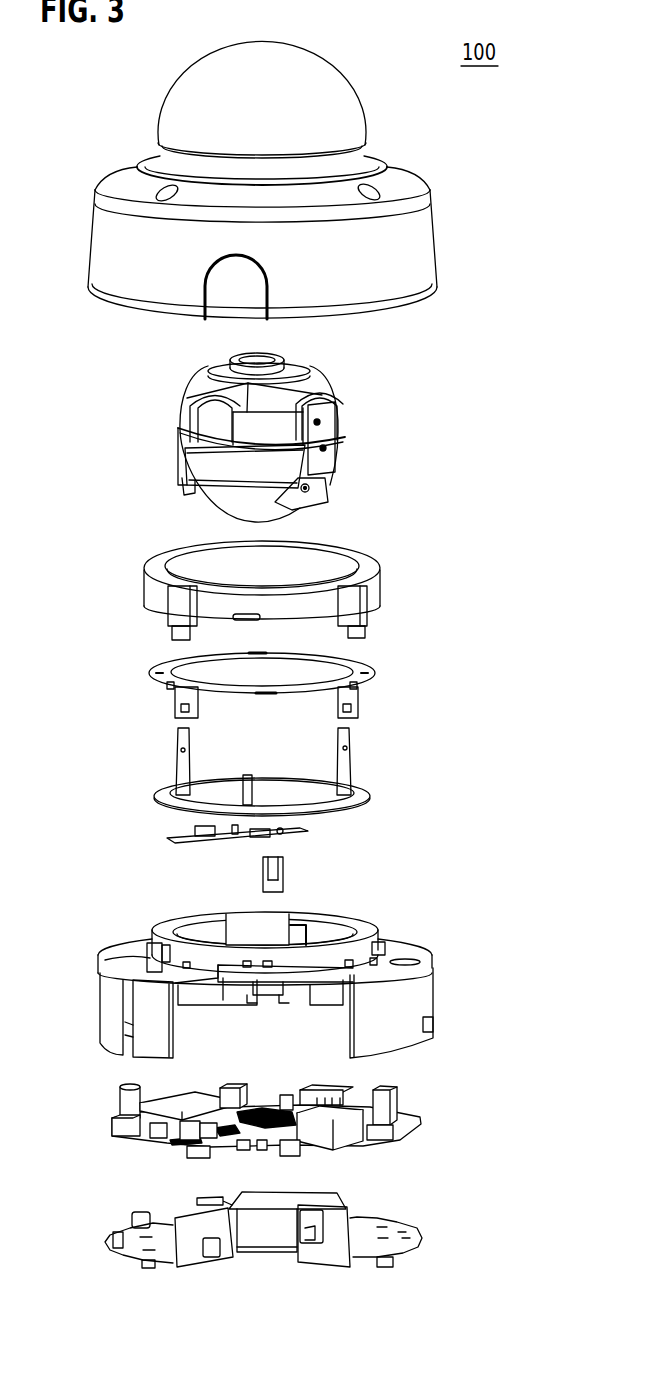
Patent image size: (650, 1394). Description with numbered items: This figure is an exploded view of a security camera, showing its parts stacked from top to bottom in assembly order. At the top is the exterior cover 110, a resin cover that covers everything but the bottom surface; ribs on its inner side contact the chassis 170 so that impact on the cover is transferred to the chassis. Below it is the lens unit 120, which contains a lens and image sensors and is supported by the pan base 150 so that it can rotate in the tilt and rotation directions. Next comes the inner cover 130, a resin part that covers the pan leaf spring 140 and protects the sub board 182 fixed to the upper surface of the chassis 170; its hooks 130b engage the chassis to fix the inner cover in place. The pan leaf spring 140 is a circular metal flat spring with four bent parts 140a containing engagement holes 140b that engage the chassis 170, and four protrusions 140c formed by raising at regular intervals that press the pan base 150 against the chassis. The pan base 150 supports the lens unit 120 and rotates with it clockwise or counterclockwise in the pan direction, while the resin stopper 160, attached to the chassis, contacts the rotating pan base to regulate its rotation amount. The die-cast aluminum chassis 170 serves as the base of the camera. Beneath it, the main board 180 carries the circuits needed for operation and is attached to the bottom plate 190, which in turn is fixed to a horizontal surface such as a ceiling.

The exterior cover 110 is at (437, 218).
The lens unit 120 is at (335, 388).
The inner cover 130 is at (267, 590).
The hooks 130b is at (164, 620).
The pan leaf spring 140 is at (268, 695).
The bent parts 140a is at (172, 690).
The engagement holes 140b is at (174, 708).
The protrusions 140c is at (257, 656).
The pan base 150 is at (372, 792).
The stopper 160 is at (285, 866).
The chassis 170 is at (435, 950).
The main board 180 is at (421, 1118).
The sub board 182 is at (166, 834).
The bottom plate 190 is at (424, 1228).